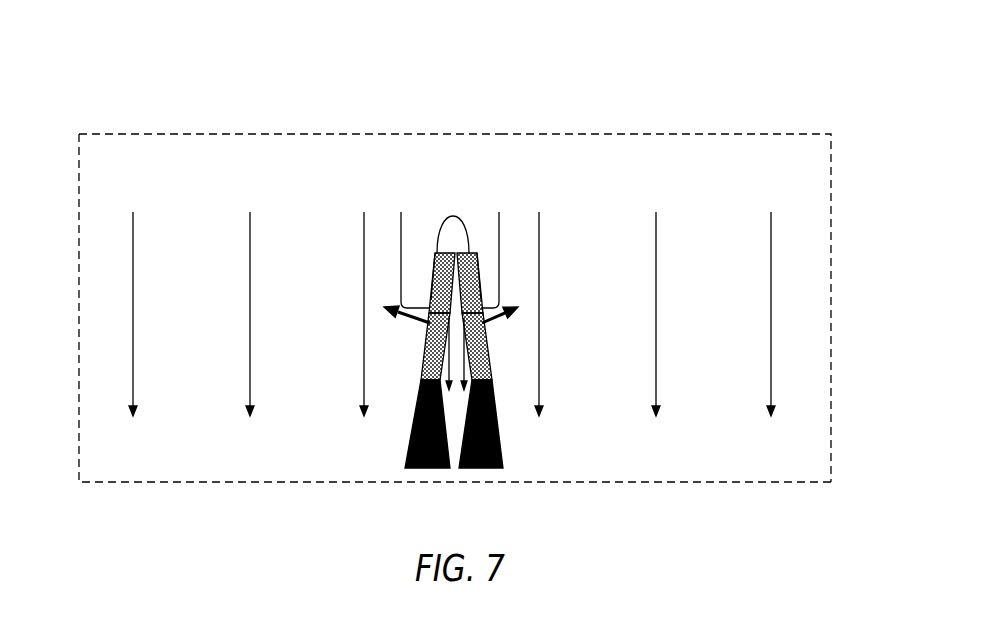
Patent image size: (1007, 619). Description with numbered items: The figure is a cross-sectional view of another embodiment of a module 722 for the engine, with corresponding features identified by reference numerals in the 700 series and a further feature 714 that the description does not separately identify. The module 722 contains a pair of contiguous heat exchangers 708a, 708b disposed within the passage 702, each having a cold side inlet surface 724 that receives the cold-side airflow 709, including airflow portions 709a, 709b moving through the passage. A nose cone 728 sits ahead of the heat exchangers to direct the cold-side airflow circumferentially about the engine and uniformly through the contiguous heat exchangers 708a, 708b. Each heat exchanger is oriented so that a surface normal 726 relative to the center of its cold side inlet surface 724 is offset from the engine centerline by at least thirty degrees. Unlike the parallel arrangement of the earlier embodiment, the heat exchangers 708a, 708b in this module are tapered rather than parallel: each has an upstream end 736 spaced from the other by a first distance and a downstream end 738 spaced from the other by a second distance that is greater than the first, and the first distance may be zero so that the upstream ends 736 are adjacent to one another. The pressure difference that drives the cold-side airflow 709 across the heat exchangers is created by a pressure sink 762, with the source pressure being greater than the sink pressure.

The propulsion system flow schematic 700 is at (50, 98).
The fan duct / bypass region 714 is at (182, 133).
The module 722 is at (575, 133).
The passage 702 is at (274, 221).
The cold-side airflow 709 is at (400, 232).
The cold-side airflow portion 709a is at (133, 305).
The cold-side airflow portion 709b is at (500, 268).
The nose cone 728 is at (458, 216).
The contiguous heat exchanger 708a is at (436, 253).
The contiguous heat exchanger 708b is at (482, 255).
The upstream end 736 is at (436, 255).
The surface normal 726 is at (415, 320).
The cold side inlet surface 724 is at (424, 370).
The downstream end 738 is at (428, 385).
The pressure sink 762 is at (452, 470).